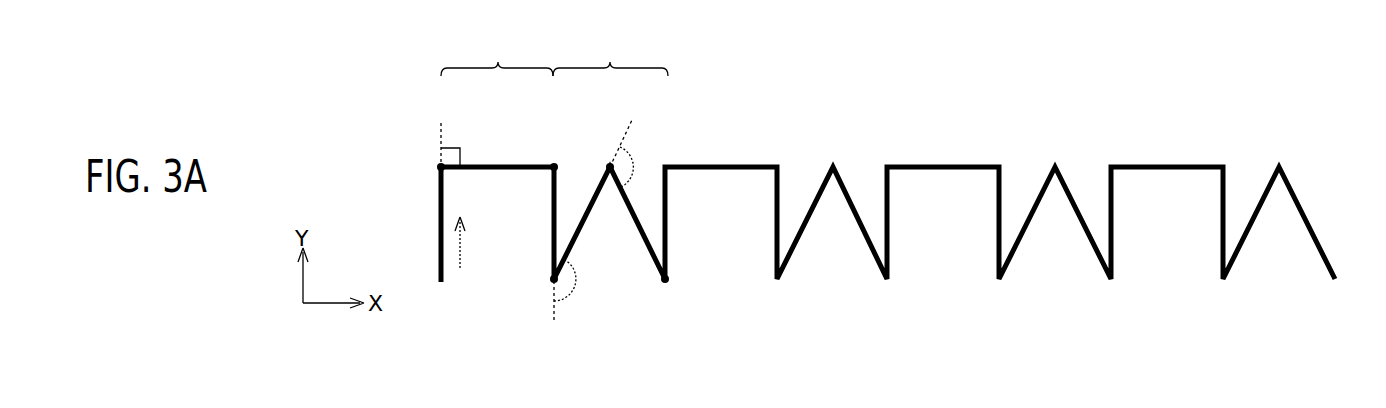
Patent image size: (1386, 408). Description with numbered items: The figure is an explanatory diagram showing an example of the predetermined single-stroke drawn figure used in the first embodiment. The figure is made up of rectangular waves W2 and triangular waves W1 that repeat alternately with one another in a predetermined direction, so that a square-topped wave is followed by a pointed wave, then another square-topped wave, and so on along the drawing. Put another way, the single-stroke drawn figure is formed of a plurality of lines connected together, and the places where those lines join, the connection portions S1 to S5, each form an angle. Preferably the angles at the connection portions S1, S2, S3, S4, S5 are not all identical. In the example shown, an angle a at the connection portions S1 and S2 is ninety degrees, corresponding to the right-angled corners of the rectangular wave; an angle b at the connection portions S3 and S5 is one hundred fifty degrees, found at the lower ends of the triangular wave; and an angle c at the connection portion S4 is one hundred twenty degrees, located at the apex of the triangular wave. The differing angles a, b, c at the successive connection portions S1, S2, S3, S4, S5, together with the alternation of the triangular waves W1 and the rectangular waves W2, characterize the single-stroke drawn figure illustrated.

The connection portion S1 is at (441, 166).
The connection portion S2 is at (553, 165).
The connection portion S3 is at (553, 281).
The connection portion S4 is at (608, 165).
The connection portion S5 is at (664, 282).
The triangular wave W1 is at (497, 53).
The rectangular wave W2 is at (610, 53).
The angle a is at (459, 154).
The angle b is at (567, 292).
The angle c is at (632, 162).